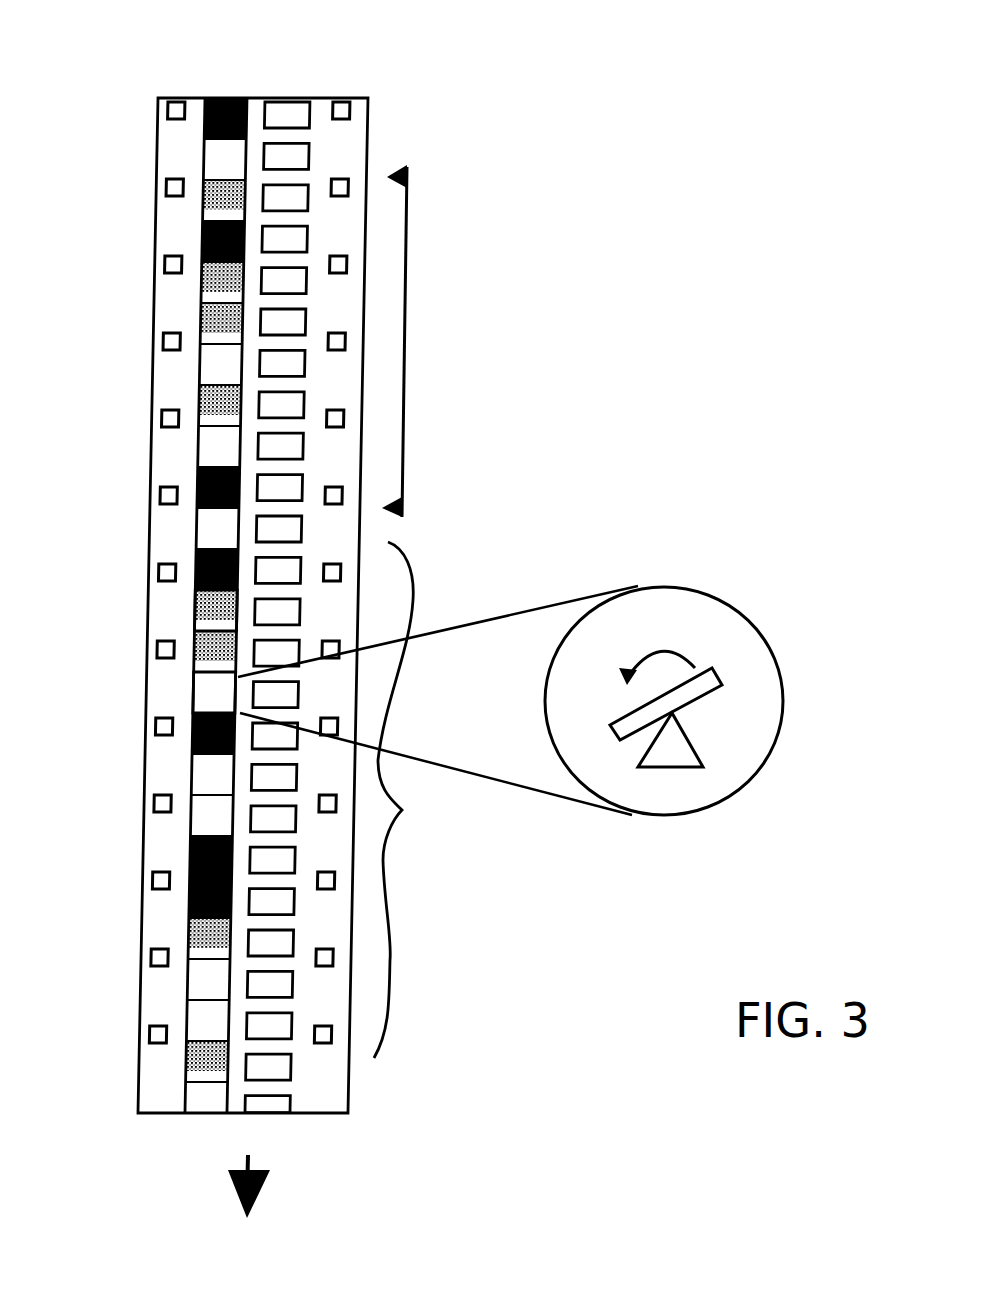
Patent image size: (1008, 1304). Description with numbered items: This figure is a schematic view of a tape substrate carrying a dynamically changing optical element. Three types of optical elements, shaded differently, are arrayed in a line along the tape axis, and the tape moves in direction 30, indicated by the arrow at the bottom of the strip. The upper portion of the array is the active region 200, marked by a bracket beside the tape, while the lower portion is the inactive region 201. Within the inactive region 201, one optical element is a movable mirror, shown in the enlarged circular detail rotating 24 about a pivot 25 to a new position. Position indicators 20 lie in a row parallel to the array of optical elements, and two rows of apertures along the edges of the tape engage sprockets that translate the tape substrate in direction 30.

The position indicators 20 is at (300, 115).
The movable mirror rotating 24 is at (703, 668).
The pivot 25 is at (674, 745).
The direction 30 is at (252, 1162).
The active region 200 is at (404, 305).
The inactive region 201 is at (432, 800).